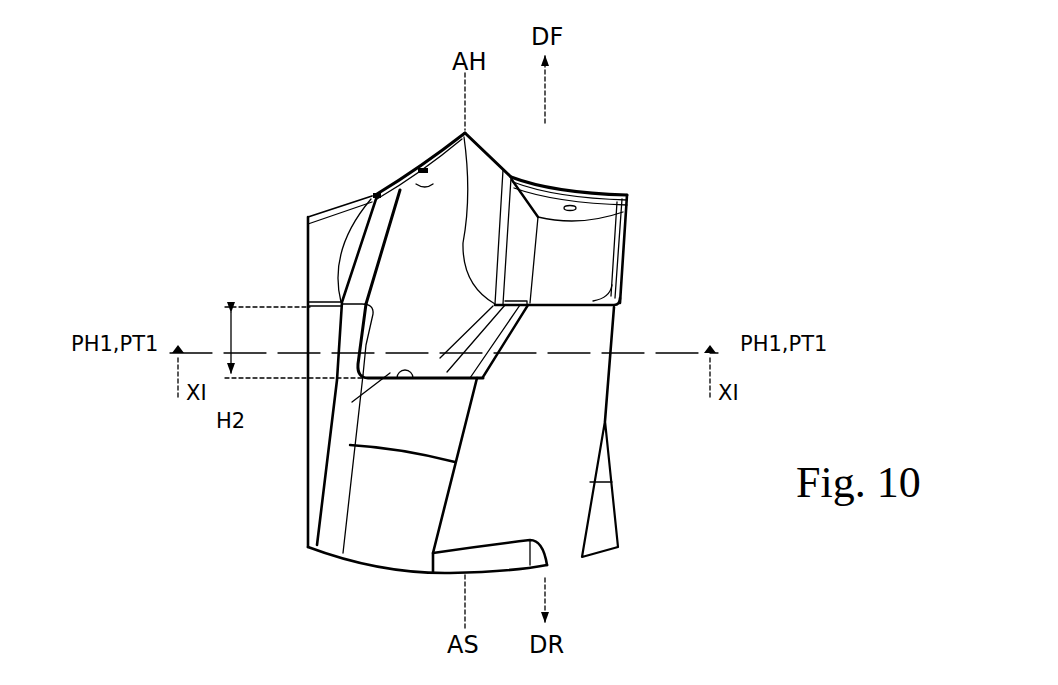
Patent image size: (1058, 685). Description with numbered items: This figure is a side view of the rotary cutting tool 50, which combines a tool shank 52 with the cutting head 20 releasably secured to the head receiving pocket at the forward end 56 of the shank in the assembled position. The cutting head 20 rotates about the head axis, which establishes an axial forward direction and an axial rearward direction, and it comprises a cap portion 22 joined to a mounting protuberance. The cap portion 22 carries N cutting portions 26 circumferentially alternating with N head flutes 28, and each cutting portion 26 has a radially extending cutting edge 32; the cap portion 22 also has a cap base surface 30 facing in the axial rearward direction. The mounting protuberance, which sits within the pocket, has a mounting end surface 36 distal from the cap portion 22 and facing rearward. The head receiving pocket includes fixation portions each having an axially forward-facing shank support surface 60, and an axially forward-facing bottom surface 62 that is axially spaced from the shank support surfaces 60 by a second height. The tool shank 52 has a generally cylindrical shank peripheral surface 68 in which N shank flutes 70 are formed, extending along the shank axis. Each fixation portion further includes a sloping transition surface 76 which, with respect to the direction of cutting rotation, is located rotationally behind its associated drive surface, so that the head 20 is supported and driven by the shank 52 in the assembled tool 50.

The cutting head 20 is at (634, 186).
The cap portion 22 is at (632, 258).
The cutting portions 26 is at (368, 195).
The head flutes 28 is at (441, 294).
The cap base surface 30 is at (569, 314).
The radially extending cutting edge 32 is at (431, 184).
The mounting end surface 36 is at (390, 374).
The rotary cutting tool 50 is at (692, 116).
The tool shank 52 is at (642, 518).
The forward end 56 is at (332, 328).
The shank support surface 60 is at (592, 303).
The bottom surface 62 is at (405, 374).
The shank peripheral surface 68 is at (551, 443).
The shank flutes 70 is at (400, 516).
The sloping transition surface 76 is at (448, 385).